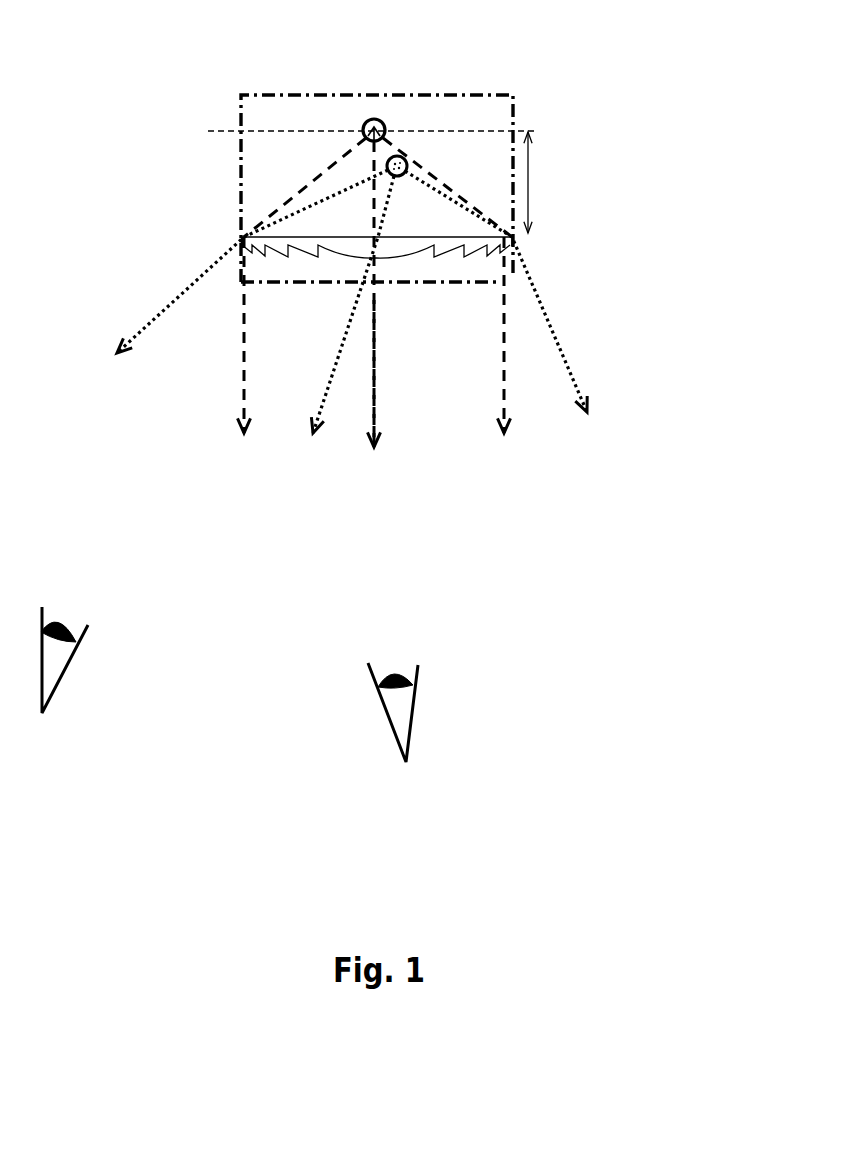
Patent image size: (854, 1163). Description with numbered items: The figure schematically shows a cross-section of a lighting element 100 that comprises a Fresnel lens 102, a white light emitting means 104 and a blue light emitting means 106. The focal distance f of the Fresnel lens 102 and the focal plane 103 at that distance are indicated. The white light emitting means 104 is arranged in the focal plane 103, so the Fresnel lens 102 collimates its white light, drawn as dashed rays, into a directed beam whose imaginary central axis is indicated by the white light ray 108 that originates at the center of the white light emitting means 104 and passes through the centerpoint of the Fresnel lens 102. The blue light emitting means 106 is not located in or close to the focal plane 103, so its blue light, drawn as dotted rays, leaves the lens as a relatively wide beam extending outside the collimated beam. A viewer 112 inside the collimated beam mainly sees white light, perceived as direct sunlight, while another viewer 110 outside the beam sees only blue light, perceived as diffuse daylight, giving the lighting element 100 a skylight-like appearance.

The lighting element 100 is at (515, 98).
The Fresnel lens 102 is at (242, 247).
The focal plane 103 is at (280, 131).
The white light emitting means 104 is at (373, 119).
The blue light emitting means 106 is at (397, 156).
The white light ray 108 is at (374, 405).
The other viewer 110 is at (48, 698).
The viewer 112 is at (397, 744).